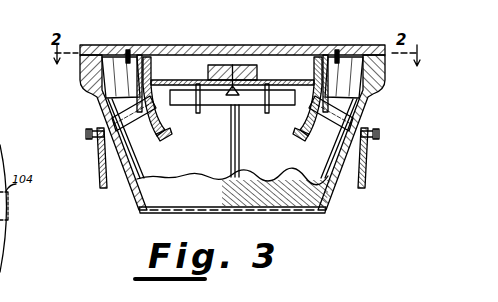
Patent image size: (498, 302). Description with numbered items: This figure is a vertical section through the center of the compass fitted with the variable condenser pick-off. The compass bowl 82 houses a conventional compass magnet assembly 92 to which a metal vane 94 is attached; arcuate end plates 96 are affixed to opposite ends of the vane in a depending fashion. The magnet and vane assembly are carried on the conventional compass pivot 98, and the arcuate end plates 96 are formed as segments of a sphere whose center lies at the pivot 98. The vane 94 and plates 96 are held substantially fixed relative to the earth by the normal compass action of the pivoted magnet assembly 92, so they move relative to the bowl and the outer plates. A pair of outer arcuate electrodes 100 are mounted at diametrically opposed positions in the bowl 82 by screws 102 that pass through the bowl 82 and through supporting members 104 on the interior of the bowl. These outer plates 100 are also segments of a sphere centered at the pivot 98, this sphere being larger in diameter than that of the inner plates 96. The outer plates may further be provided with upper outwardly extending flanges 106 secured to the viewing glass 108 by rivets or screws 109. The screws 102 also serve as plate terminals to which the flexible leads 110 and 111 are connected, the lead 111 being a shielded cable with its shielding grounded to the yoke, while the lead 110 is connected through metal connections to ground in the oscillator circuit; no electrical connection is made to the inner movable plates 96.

The compass bowl 82 is at (97, 105).
The compass magnet assembly 92 is at (262, 75).
The metal vane 94 is at (197, 82).
The arcuate end plates 96 is at (168, 113).
The compass pivot 98 is at (234, 87).
The outer arcuate electrodes 100 is at (171, 133).
The screws 102 is at (84, 140).
The supporting members 104 is at (138, 132).
The upper outwardly extending flanges 106 is at (232, 77).
The viewing glass 108 is at (215, 45).
The rivets or screws 109 is at (134, 47).
The flexible lead 110 is at (369, 160).
The flexible lead 111 is at (103, 166).